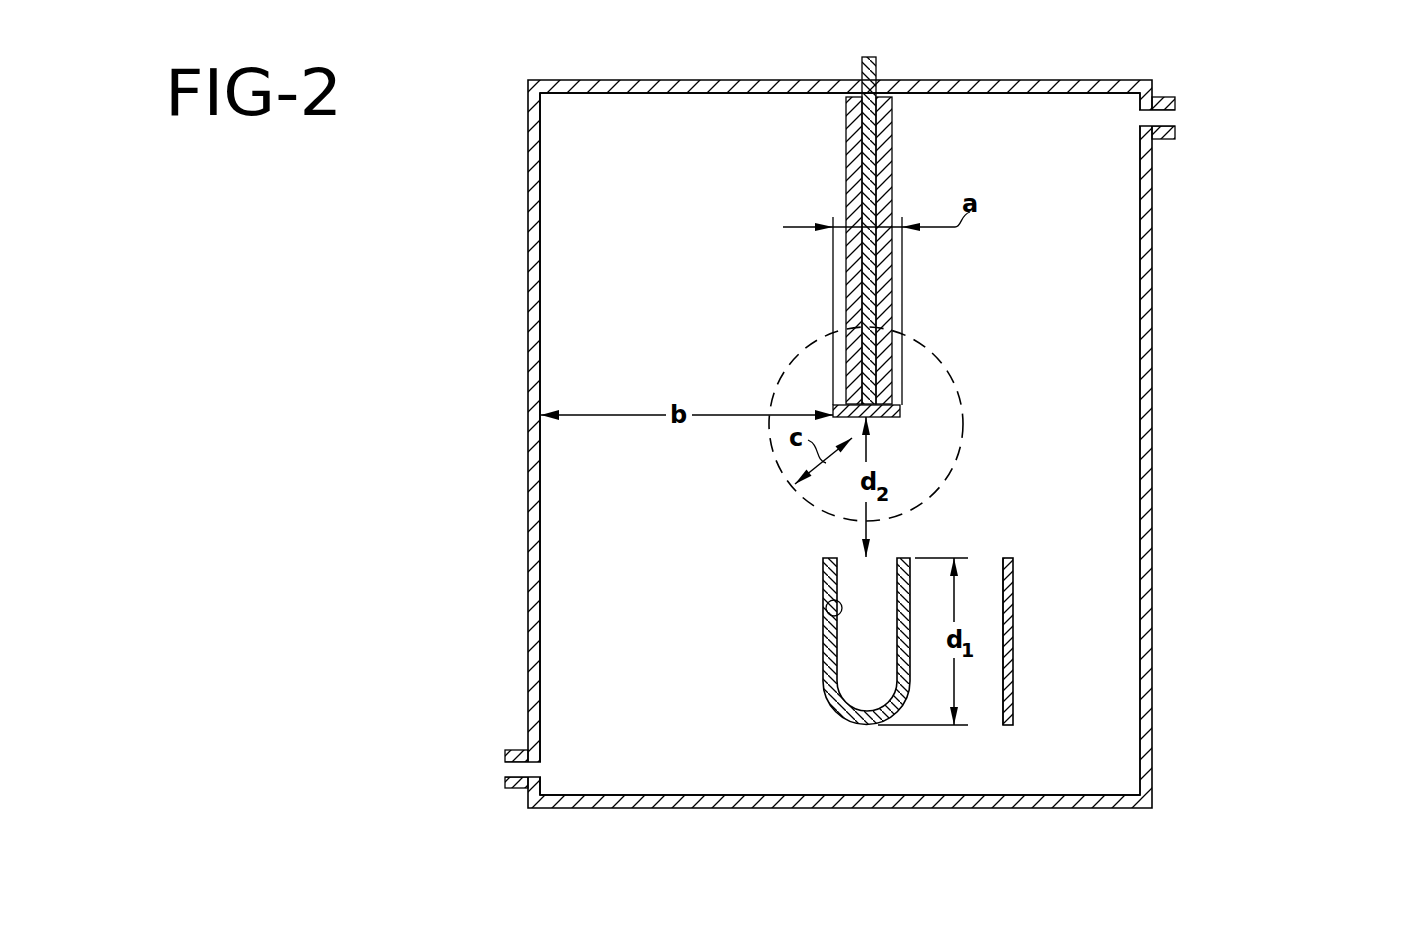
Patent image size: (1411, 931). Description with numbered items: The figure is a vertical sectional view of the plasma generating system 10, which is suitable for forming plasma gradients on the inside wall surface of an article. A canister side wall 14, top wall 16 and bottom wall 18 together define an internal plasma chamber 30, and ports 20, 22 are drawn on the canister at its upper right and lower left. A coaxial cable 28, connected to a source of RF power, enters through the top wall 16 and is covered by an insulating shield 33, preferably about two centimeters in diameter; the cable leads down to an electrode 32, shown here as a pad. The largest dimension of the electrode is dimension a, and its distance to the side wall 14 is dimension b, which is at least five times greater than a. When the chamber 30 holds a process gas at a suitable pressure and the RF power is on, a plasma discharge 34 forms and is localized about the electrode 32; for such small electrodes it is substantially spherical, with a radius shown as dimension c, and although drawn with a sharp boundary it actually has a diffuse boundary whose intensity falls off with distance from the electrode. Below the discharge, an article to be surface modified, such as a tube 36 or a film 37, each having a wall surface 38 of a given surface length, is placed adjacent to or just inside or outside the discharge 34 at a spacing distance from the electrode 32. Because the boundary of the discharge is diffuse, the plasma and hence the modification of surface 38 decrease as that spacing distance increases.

The plasma generating system 10 is at (1200, 278).
The canister side wall 14 is at (540, 728).
The canister top wall 16 is at (637, 87).
The canister bottom wall 18 is at (908, 808).
The outlet port 20 is at (1163, 120).
The inlet port 22 is at (505, 770).
The coaxial cable 28 is at (857, 185).
The internal plasma chamber 30 is at (1084, 472).
The electrode 32 is at (832, 403).
The insulating shield 33 is at (882, 158).
The plasma discharge 34 is at (800, 397).
The tube 36 is at (823, 650).
The film 37 is at (1015, 600).
The wall surface 38 is at (823, 600).